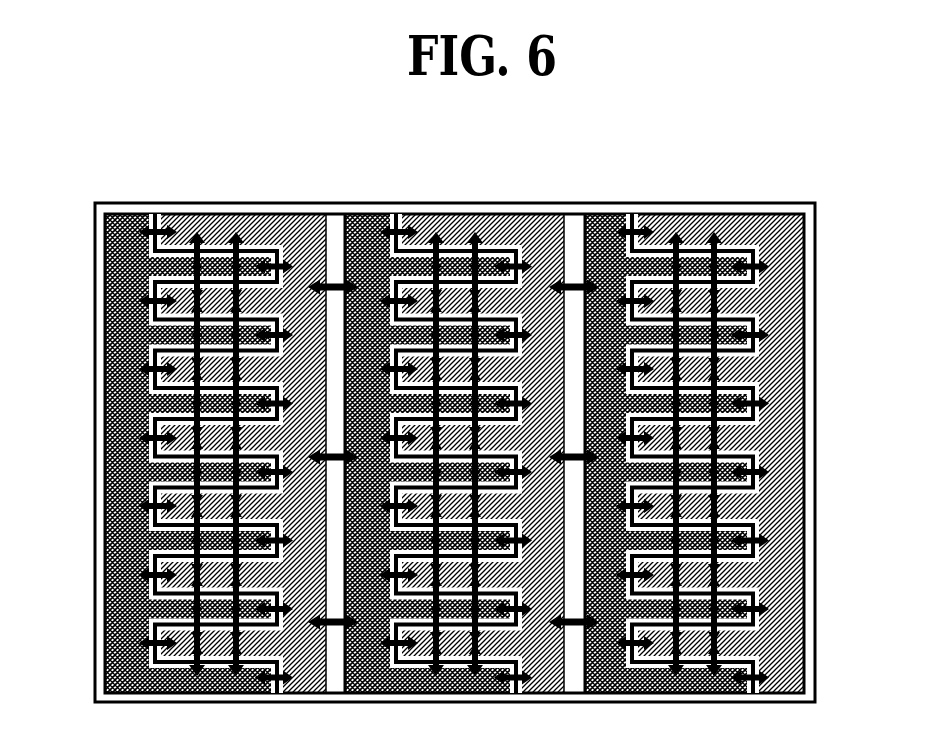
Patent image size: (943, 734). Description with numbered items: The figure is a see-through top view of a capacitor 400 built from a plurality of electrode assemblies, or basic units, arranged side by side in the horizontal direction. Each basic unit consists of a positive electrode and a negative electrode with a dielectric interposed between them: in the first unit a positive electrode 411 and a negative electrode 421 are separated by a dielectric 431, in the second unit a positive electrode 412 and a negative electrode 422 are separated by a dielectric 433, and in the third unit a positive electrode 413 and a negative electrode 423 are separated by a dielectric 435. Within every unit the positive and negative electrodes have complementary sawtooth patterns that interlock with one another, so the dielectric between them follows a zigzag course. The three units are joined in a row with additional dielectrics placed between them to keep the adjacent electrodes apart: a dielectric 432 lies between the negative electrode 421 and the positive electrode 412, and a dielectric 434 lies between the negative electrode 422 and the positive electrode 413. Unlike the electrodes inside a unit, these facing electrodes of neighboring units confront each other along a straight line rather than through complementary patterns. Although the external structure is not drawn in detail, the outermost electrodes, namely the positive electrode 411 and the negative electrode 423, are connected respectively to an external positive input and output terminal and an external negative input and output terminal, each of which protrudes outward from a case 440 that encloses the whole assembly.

The capacitor 400 is at (62, 158).
The positive electrode 411 is at (123, 222).
The positive electrode 412 is at (362, 220).
The positive electrode 413 is at (597, 222).
The negative electrode 421 is at (277, 220).
The negative electrode 422 is at (517, 220).
The negative electrode 423 is at (753, 220).
The dielectric 431 is at (155, 215).
The dielectric 432 is at (330, 220).
The dielectric 433 is at (390, 220).
The dielectric 434 is at (565, 220).
The dielectric 435 is at (630, 218).
The case 440 is at (817, 420).